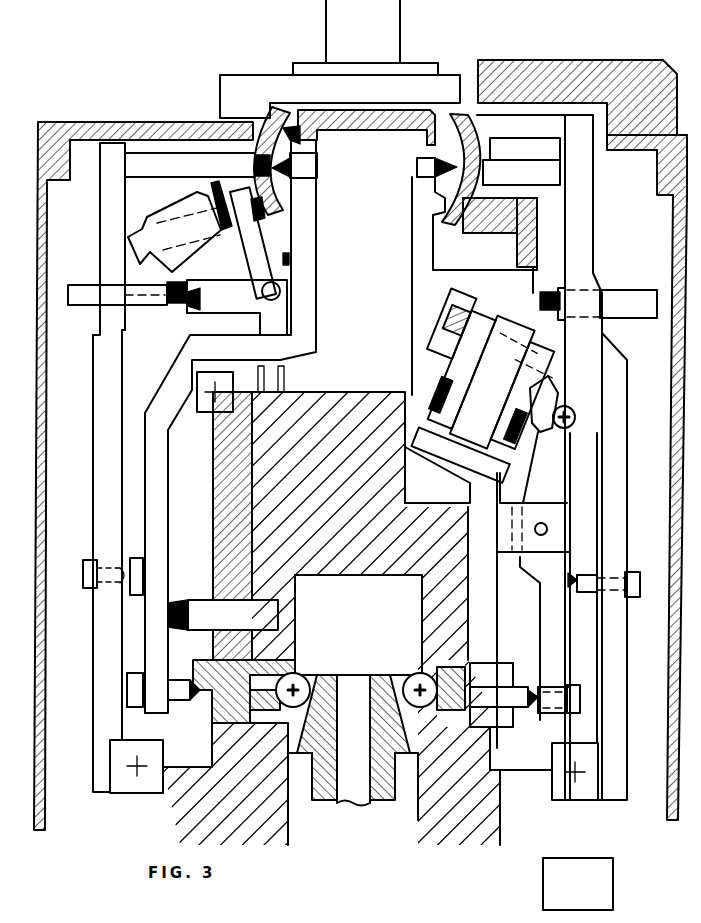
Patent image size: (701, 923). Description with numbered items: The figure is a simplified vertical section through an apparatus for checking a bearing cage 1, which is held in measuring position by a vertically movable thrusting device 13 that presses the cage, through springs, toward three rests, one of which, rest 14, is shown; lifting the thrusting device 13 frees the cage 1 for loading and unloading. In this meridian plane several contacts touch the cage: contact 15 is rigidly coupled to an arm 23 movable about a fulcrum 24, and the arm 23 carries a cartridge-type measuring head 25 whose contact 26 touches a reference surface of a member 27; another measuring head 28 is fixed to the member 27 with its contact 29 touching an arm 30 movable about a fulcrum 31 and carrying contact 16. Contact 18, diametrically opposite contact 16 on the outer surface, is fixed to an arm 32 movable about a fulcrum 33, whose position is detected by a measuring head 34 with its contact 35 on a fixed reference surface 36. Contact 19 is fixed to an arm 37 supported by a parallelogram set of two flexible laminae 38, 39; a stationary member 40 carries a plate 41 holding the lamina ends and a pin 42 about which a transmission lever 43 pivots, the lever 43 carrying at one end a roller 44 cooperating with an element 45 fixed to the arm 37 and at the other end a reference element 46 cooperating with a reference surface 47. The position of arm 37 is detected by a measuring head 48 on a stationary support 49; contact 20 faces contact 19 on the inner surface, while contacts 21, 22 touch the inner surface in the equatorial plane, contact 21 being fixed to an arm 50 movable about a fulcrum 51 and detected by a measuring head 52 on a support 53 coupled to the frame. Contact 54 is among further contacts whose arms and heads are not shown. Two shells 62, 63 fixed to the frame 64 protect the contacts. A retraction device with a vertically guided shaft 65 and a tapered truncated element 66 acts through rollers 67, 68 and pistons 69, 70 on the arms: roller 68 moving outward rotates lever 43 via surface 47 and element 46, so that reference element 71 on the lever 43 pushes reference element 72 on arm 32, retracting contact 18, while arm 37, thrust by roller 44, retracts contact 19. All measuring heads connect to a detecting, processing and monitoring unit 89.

The cage 1 is at (458, 112).
The thrusting device 13 is at (252, 130).
The rest 14 is at (490, 233).
The contact 15 is at (240, 105).
The contact 16 is at (262, 212).
The contact 18 is at (472, 112).
The contact 19 is at (450, 222).
The contact 20 is at (318, 100).
The contact 21 is at (296, 158).
The contact 22 is at (425, 152).
The arm 23 is at (100, 222).
The fulcrum 24 is at (122, 800).
The measuring head 25 is at (78, 308).
The contact 26 is at (205, 300).
The member 27 is at (205, 318).
The measuring head 28 is at (140, 240).
The contact 29 is at (197, 191).
The arm 30 is at (258, 250).
The fulcrum 31 is at (282, 290).
The arm 32 is at (593, 222).
The fulcrum 33 is at (580, 800).
The measuring head 34 is at (635, 290).
The contact 35 is at (545, 290).
The fixed reference surface 36 is at (548, 310).
The arm 37 is at (412, 255).
The flexible lamina 38 is at (452, 370).
The flexible lamina 39 is at (508, 450).
The stationary member 40 is at (460, 502).
The plate 41 is at (424, 425).
The pin 42 is at (548, 525).
The transmission lever 43 is at (570, 464).
The roller 44 is at (575, 410).
The element 45 is at (552, 392).
The reference element 46 is at (528, 712).
The reference surface 47 is at (528, 685).
The measuring head 48 is at (486, 320).
The stationary support 49 is at (478, 405).
The arm 50 is at (150, 452).
The fulcrum 51 is at (205, 410).
The measuring head 52 is at (198, 597).
The support 53 is at (216, 468).
The contact 54 is at (283, 922).
The shell 62 is at (38, 406).
The shell 63 is at (356, 120).
The frame 64 is at (344, 395).
The shaft 65 is at (350, 808).
The tapered truncated element 66 is at (390, 675).
The roller 67 is at (305, 678).
The roller 68 is at (414, 673).
The piston 69 is at (298, 668).
The piston 70 is at (432, 665).
The reference element 71 is at (571, 575).
The reference element 72 is at (572, 590).
The detecting, processing and monitoring unit 89 is at (613, 890).